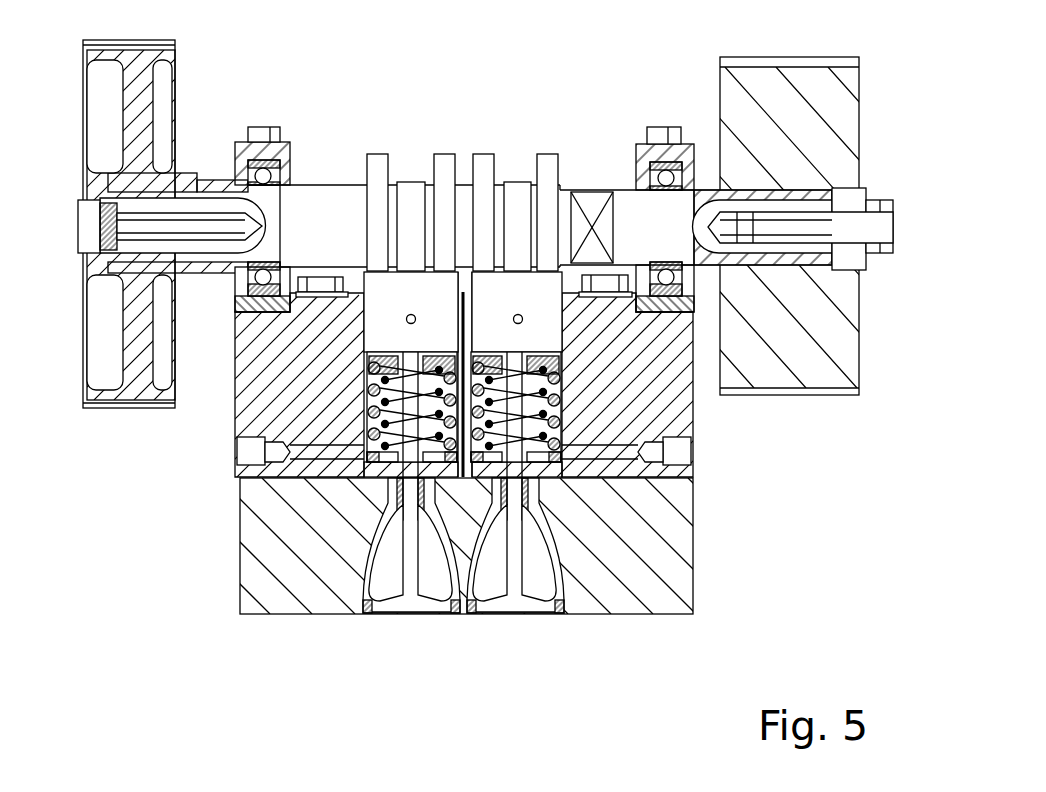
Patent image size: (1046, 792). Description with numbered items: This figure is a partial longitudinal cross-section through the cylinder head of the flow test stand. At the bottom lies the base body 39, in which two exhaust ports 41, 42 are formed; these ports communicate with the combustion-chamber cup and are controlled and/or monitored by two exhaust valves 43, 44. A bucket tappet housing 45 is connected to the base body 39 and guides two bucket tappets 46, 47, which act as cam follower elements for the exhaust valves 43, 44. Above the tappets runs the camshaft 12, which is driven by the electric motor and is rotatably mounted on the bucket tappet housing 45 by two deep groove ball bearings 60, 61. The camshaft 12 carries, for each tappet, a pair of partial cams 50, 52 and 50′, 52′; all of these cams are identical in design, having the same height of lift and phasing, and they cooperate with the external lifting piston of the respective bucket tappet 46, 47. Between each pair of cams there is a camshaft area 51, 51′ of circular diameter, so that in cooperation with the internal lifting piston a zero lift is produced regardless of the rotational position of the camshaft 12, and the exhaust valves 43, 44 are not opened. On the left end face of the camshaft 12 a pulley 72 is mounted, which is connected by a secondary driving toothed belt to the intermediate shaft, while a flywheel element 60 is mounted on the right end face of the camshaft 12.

The camshaft 12 is at (337, 193).
The base body 39 is at (260, 571).
The exhaust port 41 is at (397, 571).
The exhaust port 42 is at (552, 571).
The exhaust valve 43 is at (400, 604).
The exhaust valve 44 is at (523, 602).
The bucket tappet housing 45 is at (258, 411).
The bucket tappet 46 is at (376, 332).
The bucket tappet 47 is at (532, 332).
The cam 50 is at (380, 168).
The camshaft area 51 is at (412, 194).
The cam 52 is at (447, 168).
The cam 50′ is at (487, 168).
The camshaft area 51′ is at (522, 194).
The cam 52′ is at (552, 168).
The flywheel element 60 is at (258, 156).
The deep groove ball bearing 61 is at (690, 289).
The pulley 72 is at (128, 346).